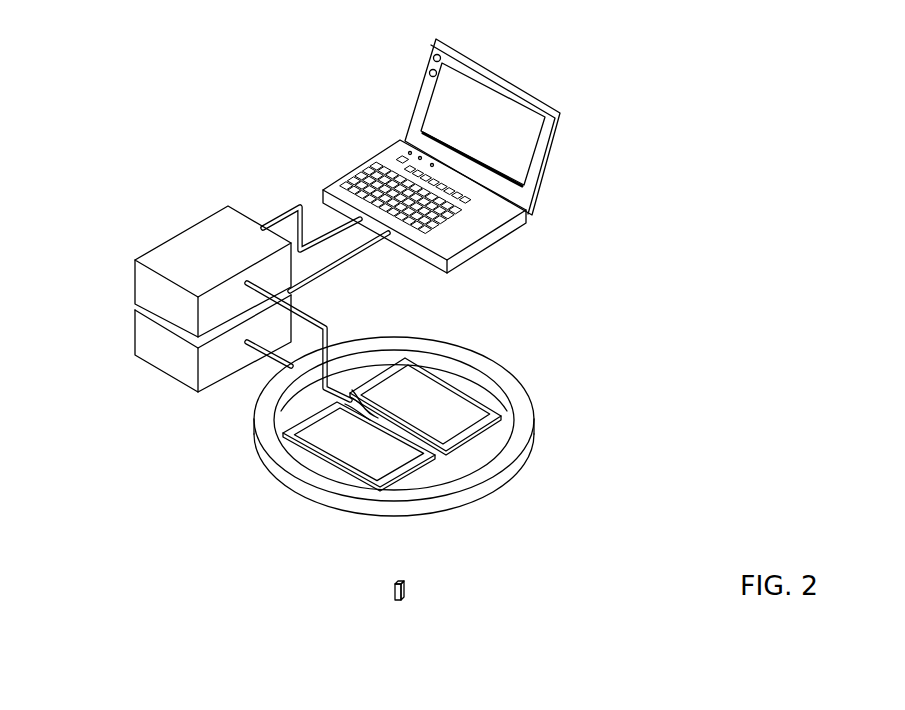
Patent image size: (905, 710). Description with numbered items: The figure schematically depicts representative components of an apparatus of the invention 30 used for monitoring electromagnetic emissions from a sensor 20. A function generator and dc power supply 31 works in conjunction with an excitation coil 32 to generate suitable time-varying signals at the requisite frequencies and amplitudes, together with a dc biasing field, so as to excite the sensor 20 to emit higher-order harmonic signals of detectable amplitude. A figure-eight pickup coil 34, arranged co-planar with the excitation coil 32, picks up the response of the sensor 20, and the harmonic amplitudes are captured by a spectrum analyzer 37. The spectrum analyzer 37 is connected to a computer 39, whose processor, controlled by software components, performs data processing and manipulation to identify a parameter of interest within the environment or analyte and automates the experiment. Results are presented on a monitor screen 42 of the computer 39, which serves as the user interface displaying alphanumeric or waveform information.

The apparatus of the invention 30 is at (126, 52).
The computer 39 is at (391, 156).
The monitor screen 42 is at (492, 131).
The spectrum analyzer 37 is at (165, 251).
The function generator and dc power supply 31 is at (175, 376).
The figure-8 pickup coil 34 is at (460, 392).
The excitation coil 32 is at (533, 445).
The sensor 20 is at (420, 585).